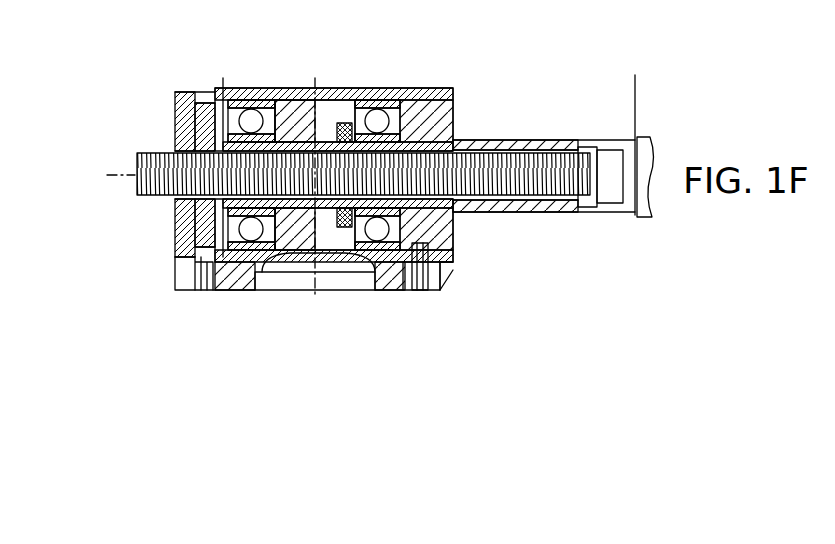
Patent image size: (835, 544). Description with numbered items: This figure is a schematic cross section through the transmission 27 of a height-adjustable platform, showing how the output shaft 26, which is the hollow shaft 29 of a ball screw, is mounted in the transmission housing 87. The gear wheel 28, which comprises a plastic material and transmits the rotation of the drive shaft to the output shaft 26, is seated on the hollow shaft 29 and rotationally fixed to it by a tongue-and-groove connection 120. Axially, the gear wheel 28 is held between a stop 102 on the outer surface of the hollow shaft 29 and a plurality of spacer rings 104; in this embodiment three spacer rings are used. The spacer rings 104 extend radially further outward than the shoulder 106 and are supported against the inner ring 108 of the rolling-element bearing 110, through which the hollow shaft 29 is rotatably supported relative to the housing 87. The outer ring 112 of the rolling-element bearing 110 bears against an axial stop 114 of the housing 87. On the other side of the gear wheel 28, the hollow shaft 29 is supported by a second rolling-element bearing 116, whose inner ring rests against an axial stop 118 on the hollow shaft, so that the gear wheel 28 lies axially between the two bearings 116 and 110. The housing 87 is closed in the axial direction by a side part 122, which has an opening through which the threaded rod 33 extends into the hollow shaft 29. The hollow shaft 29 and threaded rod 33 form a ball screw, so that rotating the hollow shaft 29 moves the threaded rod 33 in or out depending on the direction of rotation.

The transmission 27 is at (338, 72).
The gear wheel 28 is at (400, 110).
The threaded rod 33 is at (135, 176).
The transmission housing 87 is at (255, 88).
The stop 102 is at (280, 255).
The spacer rings 104 is at (312, 225).
The shoulder 106 is at (288, 255).
The inner ring 108 is at (425, 140).
The rolling-element bearing 110 is at (420, 105).
The outer ring 112 is at (353, 104).
The axial stop 114 is at (402, 238).
The second rolling-element bearing 116 is at (233, 90).
The axial stop 118 is at (300, 106).
The tongue-and-groove connection 120 is at (338, 228).
The side part 122 is at (178, 99).
The output shaft 26 is at (522, 255).
The hollow shaft 29 is at (410, 202).